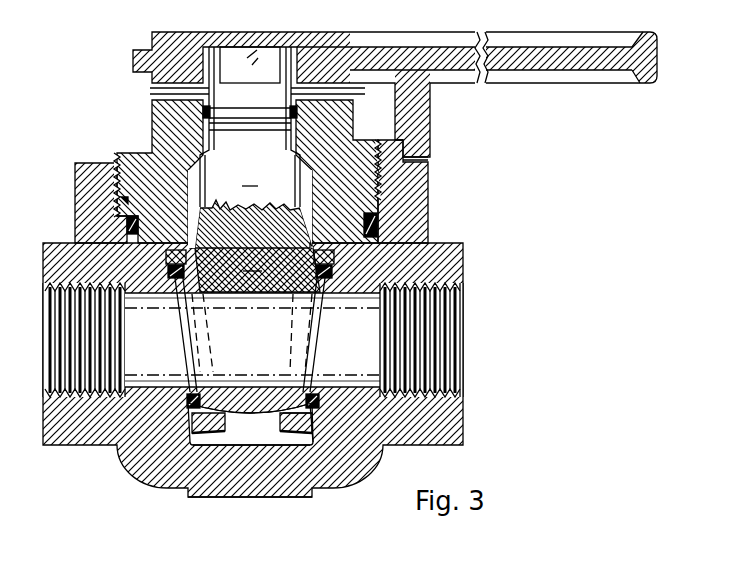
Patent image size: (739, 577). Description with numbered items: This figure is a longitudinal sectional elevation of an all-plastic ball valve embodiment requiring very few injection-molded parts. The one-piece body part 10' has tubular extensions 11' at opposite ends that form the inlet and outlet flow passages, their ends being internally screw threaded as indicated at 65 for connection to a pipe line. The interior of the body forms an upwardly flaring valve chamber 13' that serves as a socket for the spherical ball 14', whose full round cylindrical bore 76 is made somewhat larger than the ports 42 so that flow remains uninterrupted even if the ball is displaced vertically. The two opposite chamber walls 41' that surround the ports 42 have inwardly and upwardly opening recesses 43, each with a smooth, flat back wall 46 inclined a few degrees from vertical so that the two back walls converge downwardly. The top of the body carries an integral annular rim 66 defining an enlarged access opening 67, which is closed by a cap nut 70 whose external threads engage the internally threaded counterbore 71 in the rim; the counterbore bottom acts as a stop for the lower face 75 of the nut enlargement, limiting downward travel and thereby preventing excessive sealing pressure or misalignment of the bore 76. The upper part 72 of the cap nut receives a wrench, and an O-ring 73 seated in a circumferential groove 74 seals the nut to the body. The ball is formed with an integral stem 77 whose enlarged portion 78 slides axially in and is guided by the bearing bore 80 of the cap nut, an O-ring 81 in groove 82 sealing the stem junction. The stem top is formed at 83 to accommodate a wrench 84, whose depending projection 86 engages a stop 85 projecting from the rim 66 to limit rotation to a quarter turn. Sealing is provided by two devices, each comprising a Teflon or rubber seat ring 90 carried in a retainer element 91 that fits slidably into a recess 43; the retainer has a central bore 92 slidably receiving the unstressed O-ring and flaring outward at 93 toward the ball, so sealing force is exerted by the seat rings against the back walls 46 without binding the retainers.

The body part 10' is at (250, 517).
The tubular extensions 11' is at (253, 370).
The valve chamber 13' is at (251, 488).
The ball 14' is at (254, 306).
The chamber walls 41' is at (250, 424).
The ports 42 is at (327, 332).
The recesses 43 is at (290, 448).
The back wall 46 is at (213, 410).
The internal screw threads 65 is at (423, 333).
The annular flange or rim 66 is at (415, 207).
The access opening 67 is at (376, 208).
The cap nut 70 is at (133, 172).
The counterbore 71 is at (380, 180).
The upper part of cap nut 72 is at (172, 120).
The O-ring 73 is at (127, 226).
The circumferential groove 74 is at (138, 246).
The lower face 75 is at (120, 202).
The bore 76 is at (260, 297).
The stem 77 is at (250, 127).
The enlarged diameter portion 78 is at (218, 95).
The bearing bore 80 is at (290, 103).
The O-ring 81 is at (217, 113).
The circumferential groove 82 is at (258, 124).
The wrench-receiving formation 83 is at (238, 62).
The wrench 84 is at (320, 52).
The stop 85 is at (420, 160).
The depending projection 86 is at (410, 113).
The seat ring 90 is at (318, 403).
The retainer element 91 is at (300, 420).
The central bore 92 is at (302, 413).
The flared portion 93 is at (297, 408).